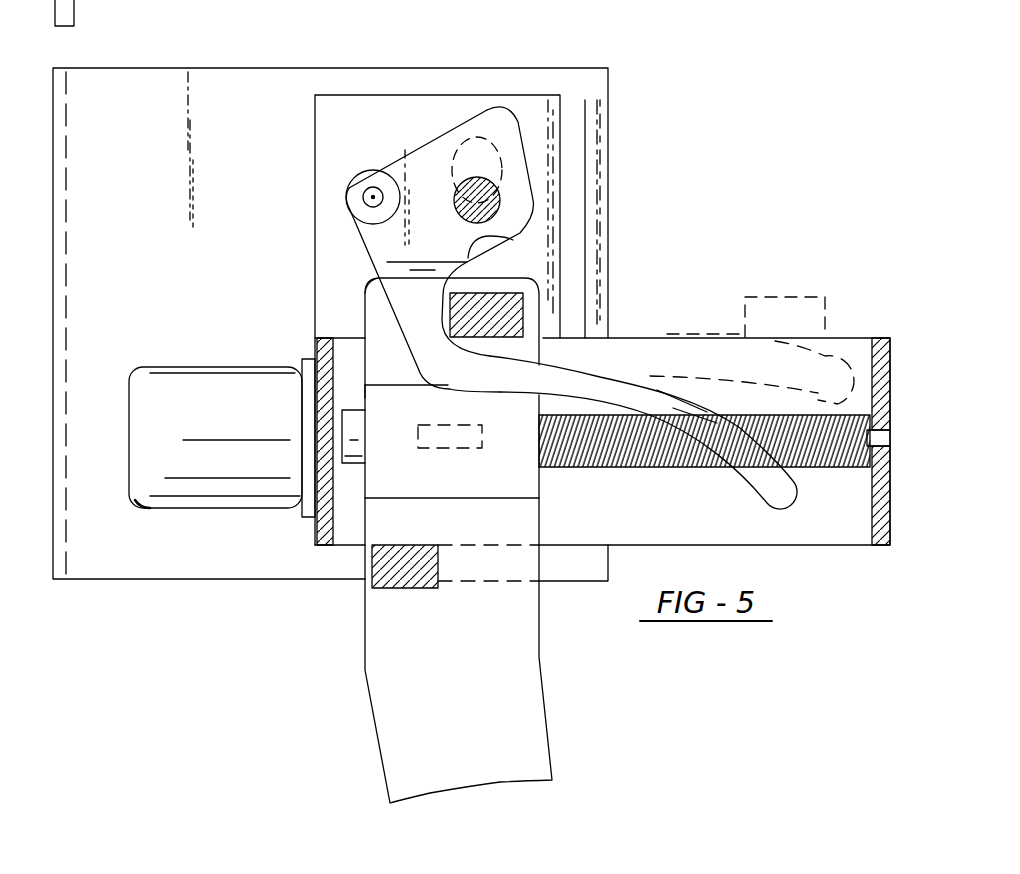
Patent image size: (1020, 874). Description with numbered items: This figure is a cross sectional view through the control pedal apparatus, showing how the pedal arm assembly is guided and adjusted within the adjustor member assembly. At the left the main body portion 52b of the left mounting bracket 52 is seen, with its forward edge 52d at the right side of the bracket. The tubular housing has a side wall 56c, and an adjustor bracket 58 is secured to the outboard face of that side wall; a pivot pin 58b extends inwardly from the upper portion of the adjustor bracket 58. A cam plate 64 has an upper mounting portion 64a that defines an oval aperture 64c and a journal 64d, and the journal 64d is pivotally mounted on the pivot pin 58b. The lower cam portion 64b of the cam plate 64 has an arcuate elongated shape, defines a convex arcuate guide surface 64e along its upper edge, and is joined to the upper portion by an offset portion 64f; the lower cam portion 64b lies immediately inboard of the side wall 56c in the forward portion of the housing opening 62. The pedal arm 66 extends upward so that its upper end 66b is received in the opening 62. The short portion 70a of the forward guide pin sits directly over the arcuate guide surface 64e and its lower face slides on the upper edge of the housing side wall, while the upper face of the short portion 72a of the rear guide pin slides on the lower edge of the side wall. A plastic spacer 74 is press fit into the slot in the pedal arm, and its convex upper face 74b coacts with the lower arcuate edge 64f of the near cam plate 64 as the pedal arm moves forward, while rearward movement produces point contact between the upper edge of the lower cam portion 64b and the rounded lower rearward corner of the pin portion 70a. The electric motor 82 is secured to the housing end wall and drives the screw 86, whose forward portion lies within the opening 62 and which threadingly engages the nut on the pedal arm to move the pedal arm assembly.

The left mounting bracket 52 is at (266, 58).
The main body portion 52b is at (163, 182).
The forward edge 52d is at (606, 97).
The adjustor bracket 58 is at (486, 95).
The pivot pin 58b is at (402, 204).
The cam plate 64 is at (345, 250).
The upper mounting portion 64a is at (380, 155).
The lower cam portion 64b is at (613, 368).
The oval aperture 64c is at (500, 200).
The journal 64d is at (372, 197).
The arcuate guide surface 64e is at (702, 405).
The offset portion 64f is at (513, 239).
The opening 62 is at (840, 345).
The pedal arm 66 is at (443, 677).
The upper end 66b is at (365, 294).
The short portion 70a is at (469, 325).
The short portion 72a is at (390, 576).
The plastic spacer 74 is at (438, 485).
The upper face 74b is at (385, 411).
The electric motor 82 is at (232, 425).
The screw 86 is at (853, 467).
The side wall 56c is at (700, 527).